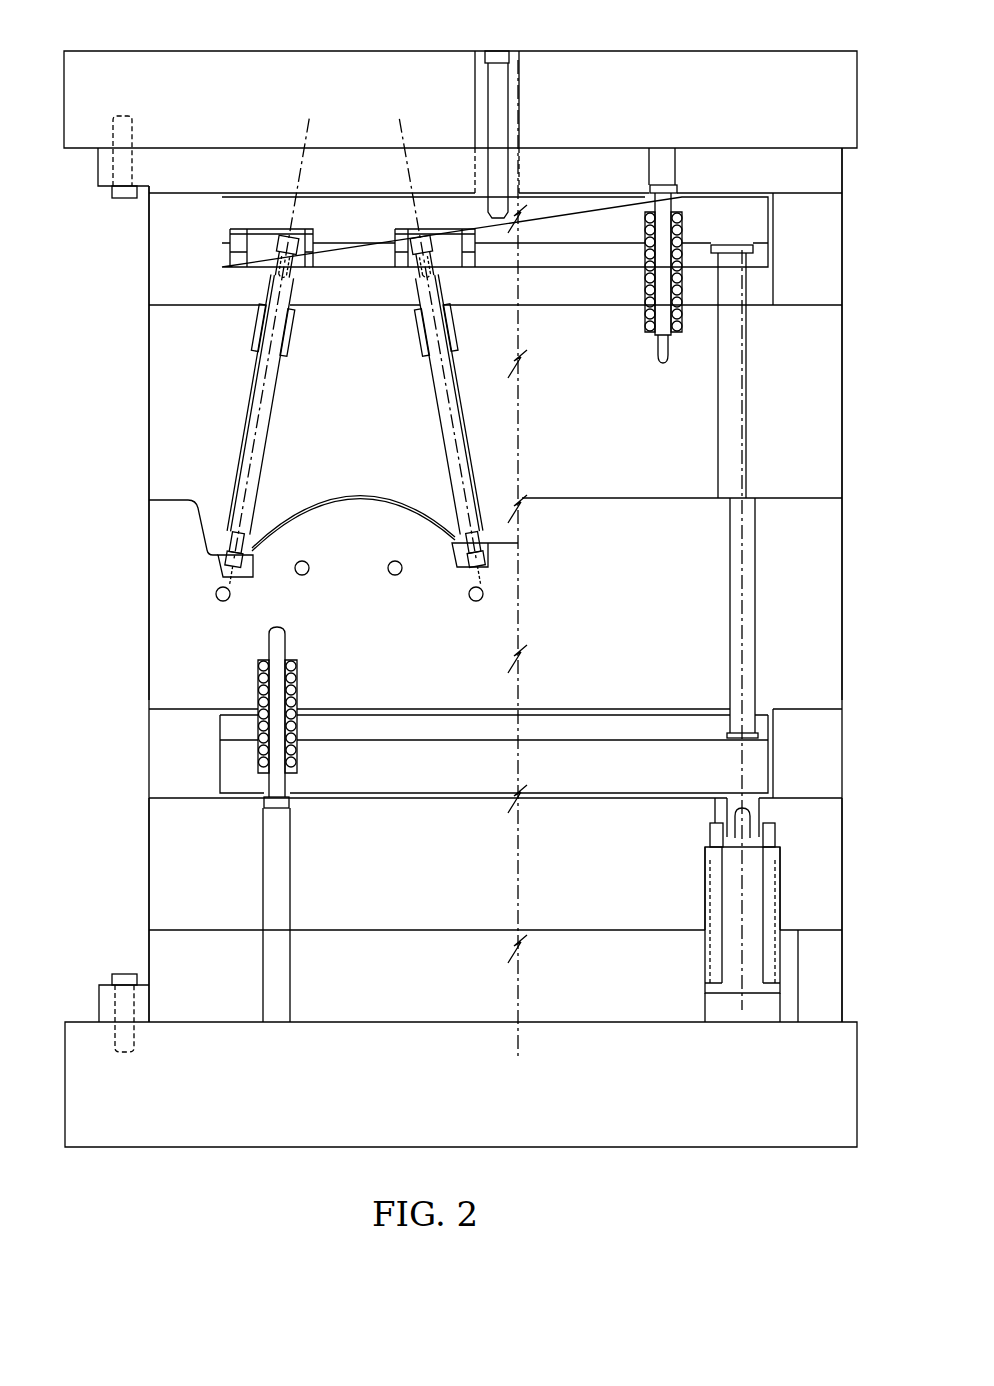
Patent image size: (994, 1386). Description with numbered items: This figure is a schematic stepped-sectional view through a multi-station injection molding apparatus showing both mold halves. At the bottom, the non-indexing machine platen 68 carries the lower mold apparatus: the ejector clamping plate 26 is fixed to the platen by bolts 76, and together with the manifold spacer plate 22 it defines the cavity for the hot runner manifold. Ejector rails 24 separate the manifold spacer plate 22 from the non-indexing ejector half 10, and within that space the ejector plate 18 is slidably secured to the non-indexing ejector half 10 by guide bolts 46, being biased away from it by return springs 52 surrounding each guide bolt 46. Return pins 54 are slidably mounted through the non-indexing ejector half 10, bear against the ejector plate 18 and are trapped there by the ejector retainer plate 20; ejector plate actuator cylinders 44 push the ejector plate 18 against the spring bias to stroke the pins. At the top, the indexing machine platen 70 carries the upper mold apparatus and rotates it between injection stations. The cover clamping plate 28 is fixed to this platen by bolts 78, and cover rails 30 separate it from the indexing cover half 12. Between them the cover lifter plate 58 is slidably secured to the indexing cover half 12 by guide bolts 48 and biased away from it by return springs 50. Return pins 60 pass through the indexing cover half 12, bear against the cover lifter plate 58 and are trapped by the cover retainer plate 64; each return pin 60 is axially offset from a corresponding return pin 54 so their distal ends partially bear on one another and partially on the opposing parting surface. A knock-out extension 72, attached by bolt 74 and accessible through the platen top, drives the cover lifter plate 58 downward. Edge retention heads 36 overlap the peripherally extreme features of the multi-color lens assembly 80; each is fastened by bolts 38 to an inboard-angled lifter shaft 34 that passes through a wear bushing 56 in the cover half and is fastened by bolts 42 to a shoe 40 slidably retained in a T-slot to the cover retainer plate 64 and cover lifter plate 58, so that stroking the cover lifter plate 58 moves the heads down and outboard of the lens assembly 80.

The non-indexing ejector half 10 is at (785, 535).
The indexing cover half 12 is at (775, 407).
The ejector plate 18 is at (758, 770).
The ejector retainer plate 20 is at (670, 728).
The manifold spacer plate 22 is at (176, 862).
The ejector rails 24 is at (162, 764).
The ejector clamping plate 26 is at (236, 1005).
The cover clamping plate 28 is at (181, 170).
The cover rails 30 is at (162, 277).
The lifter shafts 34 is at (432, 373).
The edge retention heads 36 is at (250, 582).
The bolts 38 is at (226, 567).
The shoe 40 is at (256, 258).
The bolts 42 is at (413, 246).
The ejector plate actuator cylinders 44 is at (760, 873).
The guide bolts 46 is at (274, 698).
The guide bolts 48 is at (663, 205).
The return springs 50 is at (675, 285).
The return springs 52 is at (290, 673).
The return pins 54 is at (750, 603).
The wear bushing 56 is at (258, 339).
The cover lifter plate 58 is at (755, 218).
The return pins 60 is at (722, 408).
The cover retainer plate 64 is at (585, 257).
The non-indexing machine platen 68 is at (268, 1130).
The indexing machine platen 70 is at (87, 95).
The knock-out extension 72 is at (512, 86).
The bolt 74 is at (501, 62).
The bolts 76 is at (125, 973).
The bolts 78 is at (123, 200).
The multi-color lens assembly 80 is at (357, 501).